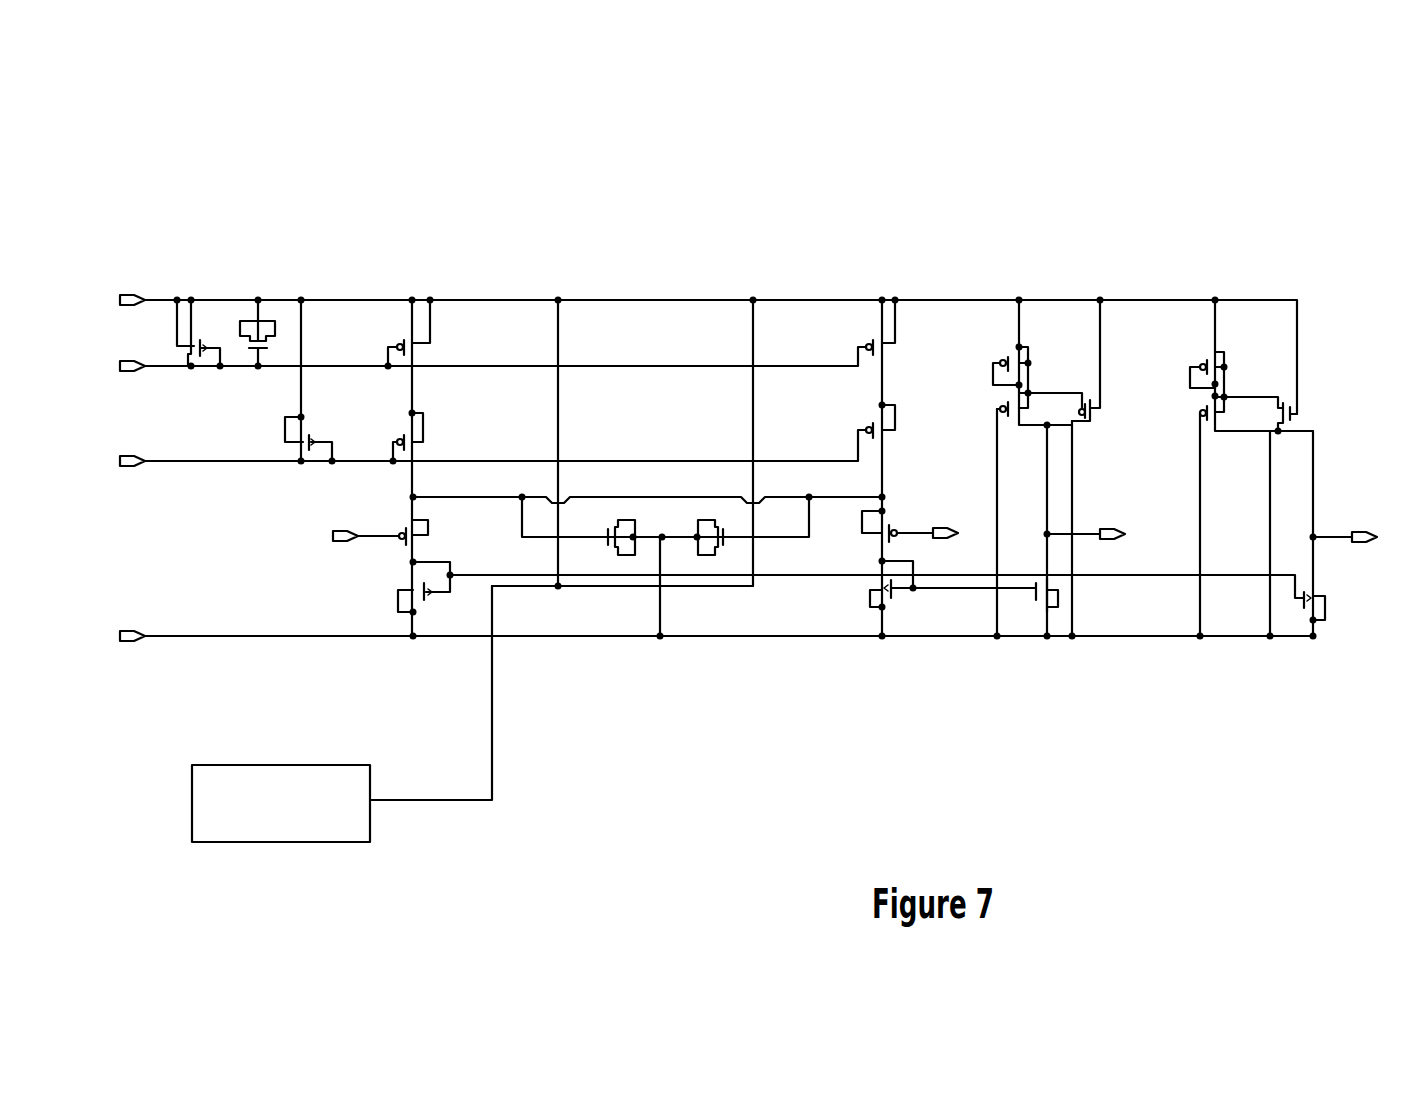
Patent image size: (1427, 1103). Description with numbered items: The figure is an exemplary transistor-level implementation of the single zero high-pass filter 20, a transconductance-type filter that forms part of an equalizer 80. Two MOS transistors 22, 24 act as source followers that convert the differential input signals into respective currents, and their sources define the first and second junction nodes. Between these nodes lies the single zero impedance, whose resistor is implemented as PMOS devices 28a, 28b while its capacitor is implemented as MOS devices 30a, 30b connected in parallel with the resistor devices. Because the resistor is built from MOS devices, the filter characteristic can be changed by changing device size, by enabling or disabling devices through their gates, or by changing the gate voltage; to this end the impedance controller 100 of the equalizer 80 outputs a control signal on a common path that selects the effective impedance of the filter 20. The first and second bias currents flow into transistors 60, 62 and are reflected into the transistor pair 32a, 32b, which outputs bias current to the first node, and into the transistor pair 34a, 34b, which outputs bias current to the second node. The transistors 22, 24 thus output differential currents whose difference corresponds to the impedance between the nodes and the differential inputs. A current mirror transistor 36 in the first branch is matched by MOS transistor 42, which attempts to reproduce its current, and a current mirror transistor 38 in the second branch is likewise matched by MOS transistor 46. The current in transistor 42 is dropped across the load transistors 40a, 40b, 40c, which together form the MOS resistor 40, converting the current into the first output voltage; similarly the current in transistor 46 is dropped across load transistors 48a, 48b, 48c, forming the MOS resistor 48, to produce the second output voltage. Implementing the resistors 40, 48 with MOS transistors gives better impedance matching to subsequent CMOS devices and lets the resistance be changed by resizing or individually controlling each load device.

The single zero high-pass filter 20 is at (805, 208).
The MOS transistor 22 is at (435, 542).
The MOS transistor 24 is at (876, 545).
The MOS transistor (resistor) 28a is at (556, 498).
The MOS transistor (resistor) 28b is at (766, 496).
The capacitor transistor 30a is at (626, 522).
The capacitor transistor 30b is at (728, 517).
The MOS transistor 32a is at (425, 351).
The MOS transistor 32b is at (425, 444).
The MOS transistor 34a is at (868, 340).
The MOS transistor 34b is at (868, 432).
The current mirror transistor 36 is at (398, 601).
The current mirror transistor 38 is at (868, 603).
The resistor (load transistor group) 40 is at (1288, 442).
The load transistor 40a is at (1203, 360).
The load transistor 40b is at (1196, 420).
The load transistor 40c is at (1298, 410).
The MOS transistor 42 is at (1328, 604).
The MOS transistor 46 is at (1040, 602).
The resistor (load transistor group) 48 is at (1050, 442).
The load transistor 48a is at (1003, 355).
The load transistor 48b is at (1000, 406).
The load transistor 48c is at (1100, 412).
The transistor 60 is at (198, 330).
The transistor 62 is at (285, 442).
The equalizer 80 is at (608, 798).
The impedance controller 100 is at (290, 843).